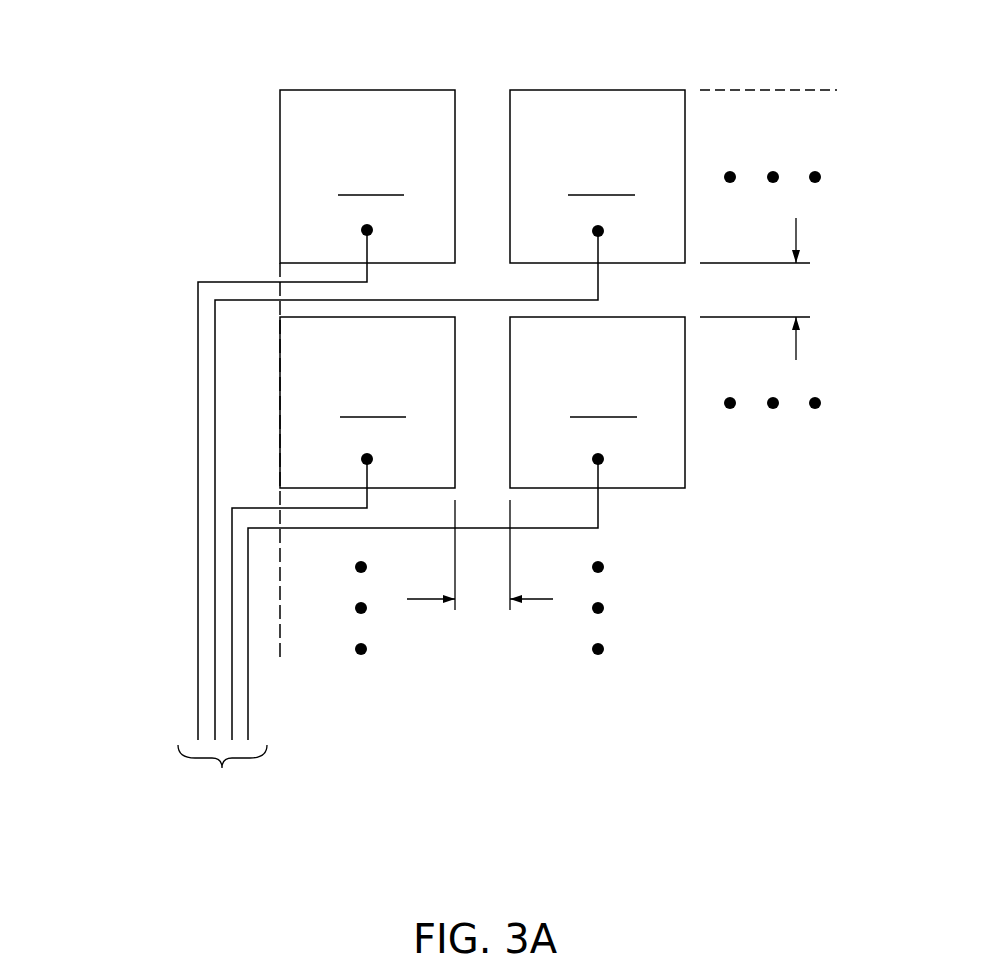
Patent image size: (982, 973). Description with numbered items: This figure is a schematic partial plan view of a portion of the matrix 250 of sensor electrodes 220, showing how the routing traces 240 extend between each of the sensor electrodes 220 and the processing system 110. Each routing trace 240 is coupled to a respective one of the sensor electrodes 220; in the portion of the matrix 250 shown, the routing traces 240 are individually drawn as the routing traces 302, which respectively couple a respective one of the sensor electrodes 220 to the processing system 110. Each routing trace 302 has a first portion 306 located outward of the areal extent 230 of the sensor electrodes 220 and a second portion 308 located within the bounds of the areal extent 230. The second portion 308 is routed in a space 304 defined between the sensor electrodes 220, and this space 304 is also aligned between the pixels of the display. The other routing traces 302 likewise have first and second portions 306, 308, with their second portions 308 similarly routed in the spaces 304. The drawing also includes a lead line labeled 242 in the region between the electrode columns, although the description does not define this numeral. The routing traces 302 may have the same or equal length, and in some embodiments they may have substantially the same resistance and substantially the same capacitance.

The sensor electrodes 220 is at (482, 289).
The areal extent 230 is at (738, 88).
The routing traces 240 is at (480, 152).
The column gap 242 is at (248, 270).
The matrix 250 is at (348, 123).
The routing traces 302 is at (248, 645).
The space 304 is at (792, 292).
The first portion 306 is at (215, 280).
The second portion 308 is at (317, 282).
The processing system 110 is at (222, 789).